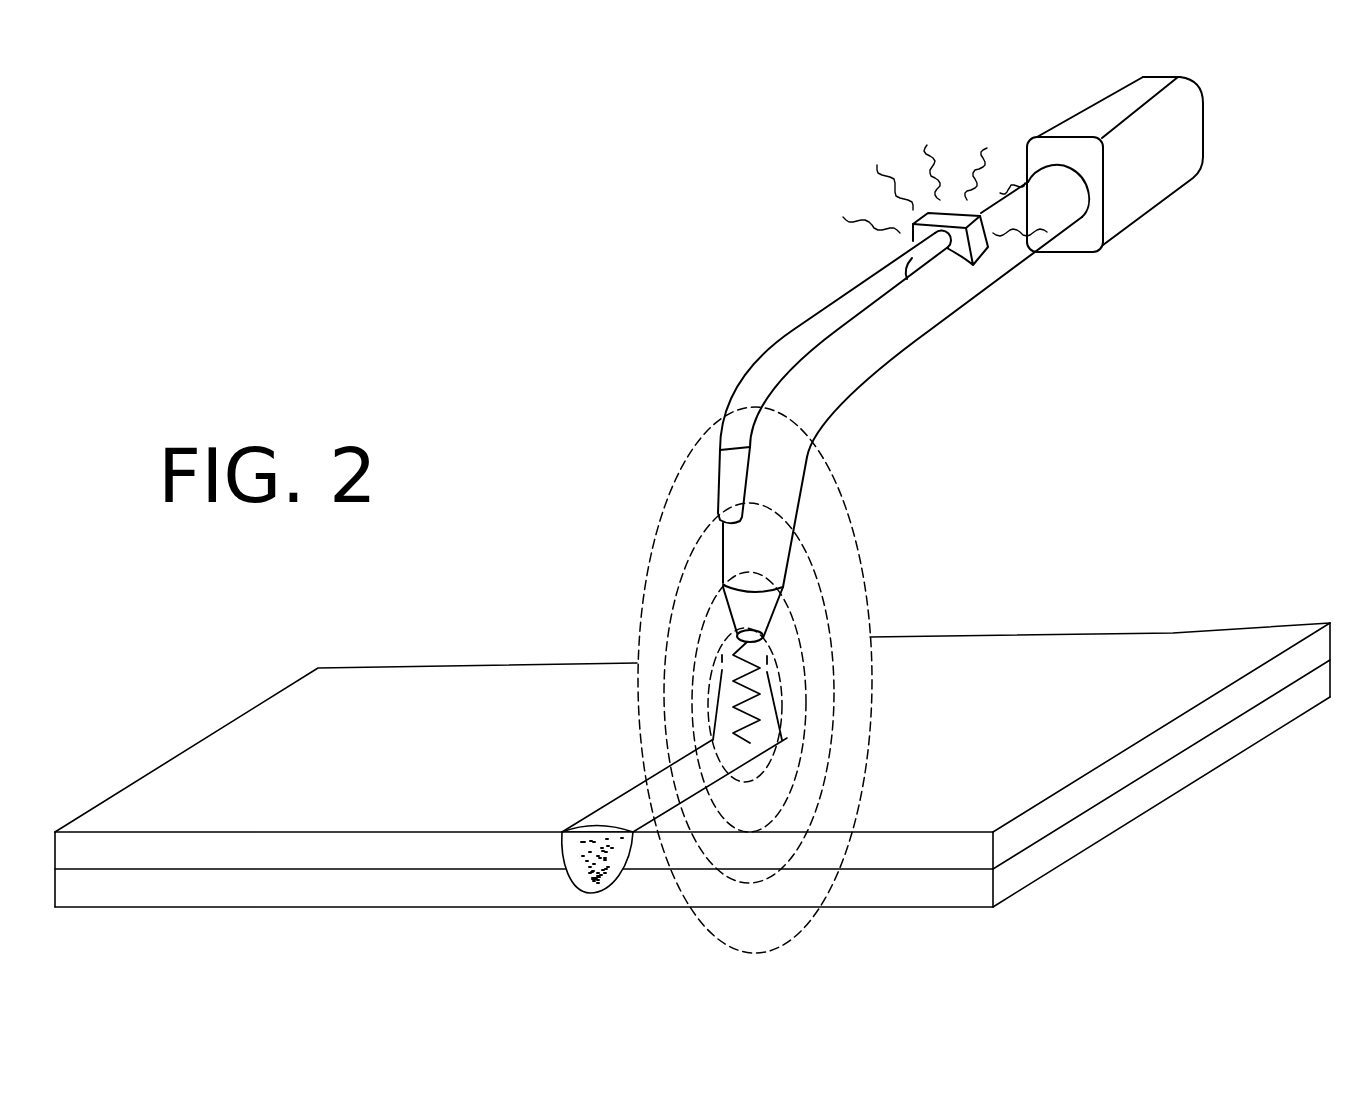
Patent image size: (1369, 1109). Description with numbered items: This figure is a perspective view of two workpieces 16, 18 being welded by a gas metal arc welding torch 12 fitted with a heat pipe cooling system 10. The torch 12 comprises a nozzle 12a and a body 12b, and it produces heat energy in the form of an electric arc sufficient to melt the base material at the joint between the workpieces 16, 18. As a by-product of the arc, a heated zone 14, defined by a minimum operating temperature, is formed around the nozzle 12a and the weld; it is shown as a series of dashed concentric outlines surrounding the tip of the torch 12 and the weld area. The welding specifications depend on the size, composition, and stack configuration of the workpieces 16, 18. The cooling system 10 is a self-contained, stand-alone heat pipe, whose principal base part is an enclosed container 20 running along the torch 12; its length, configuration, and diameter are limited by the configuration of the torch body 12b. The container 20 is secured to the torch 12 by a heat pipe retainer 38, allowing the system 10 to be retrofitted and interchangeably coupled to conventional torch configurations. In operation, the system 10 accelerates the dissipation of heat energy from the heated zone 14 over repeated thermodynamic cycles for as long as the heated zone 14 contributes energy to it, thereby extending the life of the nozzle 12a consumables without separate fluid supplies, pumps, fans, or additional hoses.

The heat pipe cooling system 10 is at (556, 266).
The welding torch 12 is at (960, 359).
The nozzle 12a is at (773, 550).
The body 12b is at (990, 284).
The heated zone 14 is at (655, 527).
The workpiece 16 is at (1133, 732).
The workpiece 18 is at (1108, 835).
The enclosed container 20 is at (873, 274).
The heat pipe retainer 38 is at (913, 223).